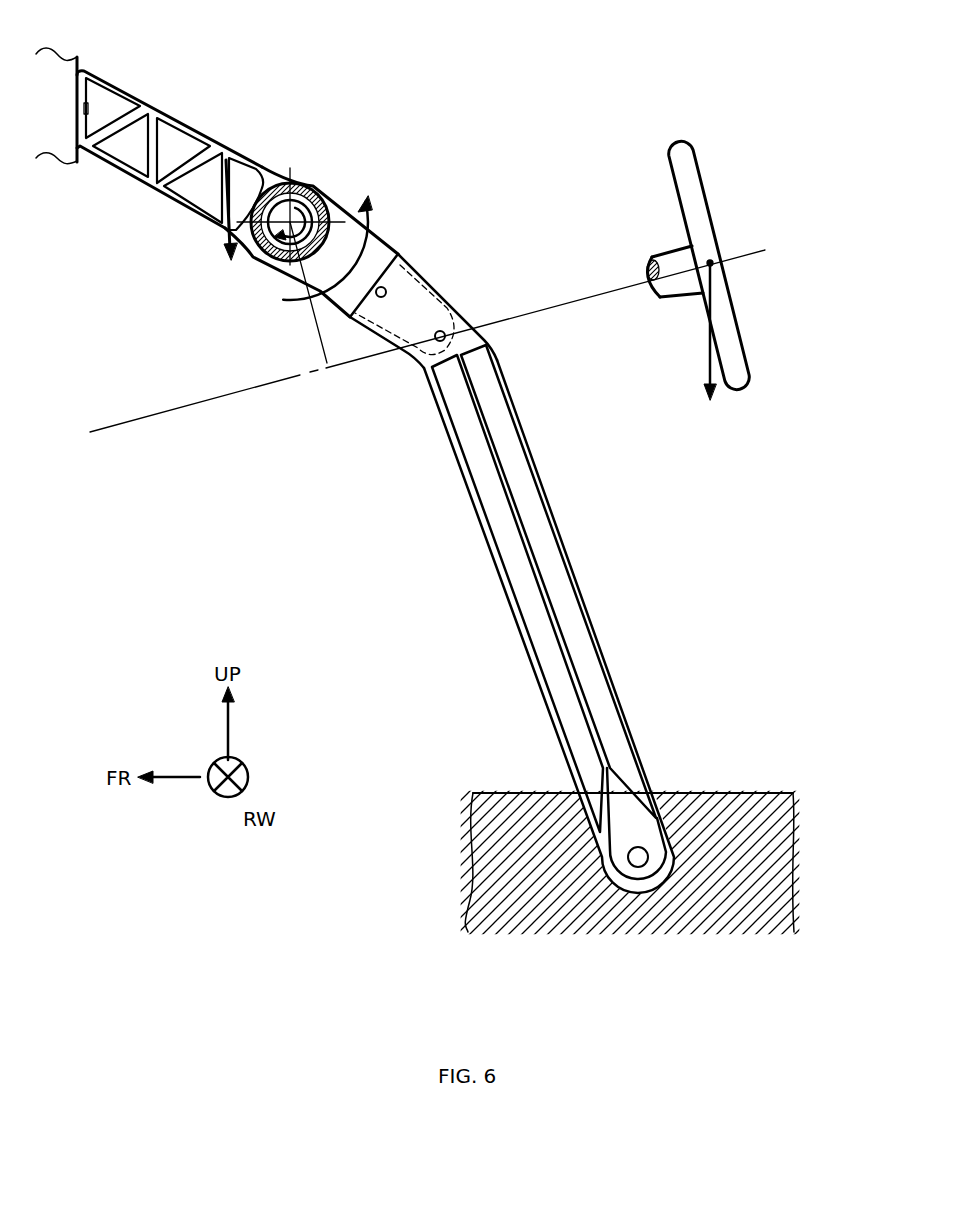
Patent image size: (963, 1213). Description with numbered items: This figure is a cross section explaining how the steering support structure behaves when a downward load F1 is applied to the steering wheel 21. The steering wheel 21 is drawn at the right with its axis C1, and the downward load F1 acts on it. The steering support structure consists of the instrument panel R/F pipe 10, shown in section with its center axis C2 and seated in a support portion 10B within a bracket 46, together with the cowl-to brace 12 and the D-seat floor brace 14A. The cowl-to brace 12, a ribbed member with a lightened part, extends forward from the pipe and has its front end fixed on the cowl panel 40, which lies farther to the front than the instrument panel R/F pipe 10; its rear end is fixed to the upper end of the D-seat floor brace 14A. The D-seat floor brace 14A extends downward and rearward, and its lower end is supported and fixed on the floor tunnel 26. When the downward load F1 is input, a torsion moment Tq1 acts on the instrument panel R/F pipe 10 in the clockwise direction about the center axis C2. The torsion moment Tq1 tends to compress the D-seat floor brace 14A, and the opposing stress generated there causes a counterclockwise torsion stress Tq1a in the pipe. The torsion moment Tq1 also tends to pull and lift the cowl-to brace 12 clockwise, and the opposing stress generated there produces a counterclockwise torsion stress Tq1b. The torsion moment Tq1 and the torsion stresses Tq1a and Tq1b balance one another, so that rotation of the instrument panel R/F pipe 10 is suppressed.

The cowl panel 40 is at (63, 68).
The cowl-to brace 12 is at (143, 104).
The steering column support 10B is at (273, 182).
The instrument panel R/F pipe 10 is at (291, 175).
The bracket housing 46 is at (313, 188).
The steering wheel 21 is at (688, 191).
The D-seat floor brace 14A is at (557, 521).
The floor tunnel 26 is at (518, 807).
The torsion moment Tq1 is at (327, 215).
The torsion stress Tq1a is at (373, 223).
The torsion stress Tq1b is at (212, 237).
The steering axis C1 is at (445, 335).
The center axis C2 is at (261, 258).
The downward load F1 is at (712, 342).